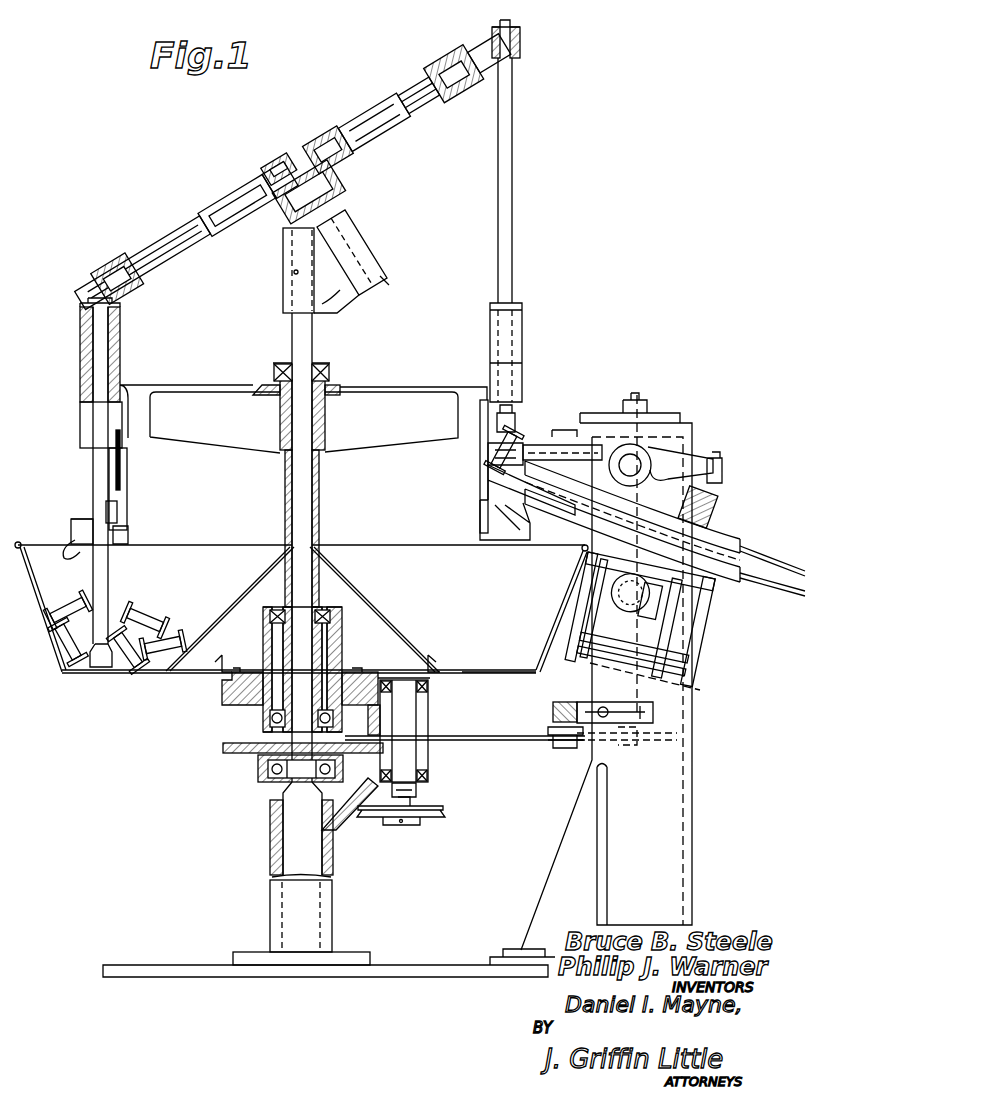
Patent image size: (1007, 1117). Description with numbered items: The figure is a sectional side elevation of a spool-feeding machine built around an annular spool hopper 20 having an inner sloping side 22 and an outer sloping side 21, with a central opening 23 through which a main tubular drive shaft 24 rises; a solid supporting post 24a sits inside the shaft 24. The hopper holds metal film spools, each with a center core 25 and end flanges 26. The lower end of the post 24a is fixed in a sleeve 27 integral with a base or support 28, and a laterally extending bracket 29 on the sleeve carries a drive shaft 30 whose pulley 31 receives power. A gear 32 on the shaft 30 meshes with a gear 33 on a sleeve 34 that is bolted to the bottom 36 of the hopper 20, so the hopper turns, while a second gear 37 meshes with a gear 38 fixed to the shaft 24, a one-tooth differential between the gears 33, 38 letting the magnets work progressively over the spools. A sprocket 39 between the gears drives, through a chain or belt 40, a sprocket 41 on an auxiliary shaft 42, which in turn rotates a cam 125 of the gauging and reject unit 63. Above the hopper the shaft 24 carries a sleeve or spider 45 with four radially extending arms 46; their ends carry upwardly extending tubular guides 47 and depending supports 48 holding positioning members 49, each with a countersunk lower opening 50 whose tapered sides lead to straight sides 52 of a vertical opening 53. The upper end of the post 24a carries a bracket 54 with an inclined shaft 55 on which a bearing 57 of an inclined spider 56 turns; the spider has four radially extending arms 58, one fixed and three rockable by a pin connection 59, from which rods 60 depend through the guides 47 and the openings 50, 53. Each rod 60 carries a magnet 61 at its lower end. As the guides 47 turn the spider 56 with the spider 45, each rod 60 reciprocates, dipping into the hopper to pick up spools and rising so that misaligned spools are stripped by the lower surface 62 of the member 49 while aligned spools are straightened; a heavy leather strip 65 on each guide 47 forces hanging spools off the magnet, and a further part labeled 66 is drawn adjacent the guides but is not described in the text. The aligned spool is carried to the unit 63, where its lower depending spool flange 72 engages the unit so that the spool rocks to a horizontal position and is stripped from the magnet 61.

The spool hopper 20 is at (299, 631).
The outer sloping side 21 is at (54, 656).
The inner sloping side 22 is at (234, 596).
The opening 23 is at (290, 545).
The main tubular drive shaft 24 is at (322, 522).
The solid supporting post 24a is at (316, 334).
The center core 25 is at (135, 606).
The end flanges 26 is at (160, 622).
The sleeve 27 is at (334, 920).
The base or support 28 is at (350, 960).
The laterally extending bracket 29 is at (370, 796).
The drive shaft 30 is at (404, 720).
The pulley 31 is at (440, 816).
The gear 32 is at (430, 690).
The gear 33 is at (225, 698).
The sleeve 34 is at (350, 672).
The bottom 36 is at (500, 673).
The second gear 37 is at (430, 746).
The gear 38 is at (225, 748).
The sprocket 39 is at (378, 736).
The chain or belt 40 is at (505, 742).
The sprocket 41 is at (662, 745).
The auxiliary shaft 42 is at (690, 690).
The sleeve or spider 45 is at (326, 455).
The radially extending arms 46 is at (303, 419).
The tubular guides 47 is at (120, 352).
The depending supports 48 is at (130, 490).
The positioning members 49 is at (75, 528).
The countersunk lower opening 50 is at (135, 532).
The straight sides 52 is at (125, 510).
The vertical opening 53 is at (85, 520).
The bracket 54 is at (342, 293).
The inclined shaft 55 is at (370, 252).
The spider 56 is at (338, 190).
The bearing 57 is at (279, 141).
The radially extending arms 58 is at (272, 183).
The pin connection 59 is at (329, 122).
The rods 60 is at (93, 452).
The magnet 61 is at (98, 668).
The lower surface 62 is at (68, 540).
The gauging and reject unit 63 is at (699, 420).
The strip 65 is at (120, 470).
The sleeve 66 is at (128, 440).
The lower depending spool flange 72 is at (486, 478).
The cam 125 is at (642, 448).